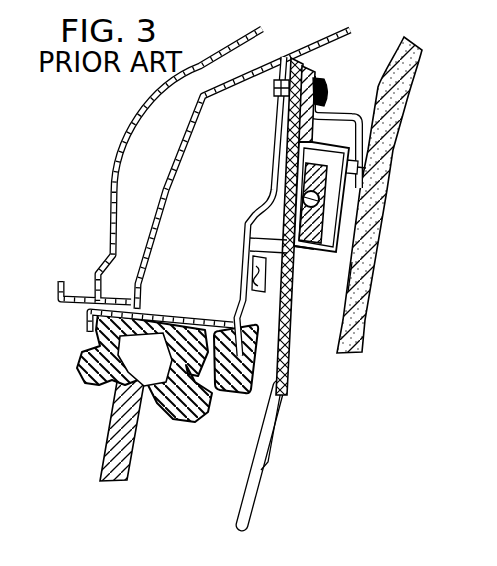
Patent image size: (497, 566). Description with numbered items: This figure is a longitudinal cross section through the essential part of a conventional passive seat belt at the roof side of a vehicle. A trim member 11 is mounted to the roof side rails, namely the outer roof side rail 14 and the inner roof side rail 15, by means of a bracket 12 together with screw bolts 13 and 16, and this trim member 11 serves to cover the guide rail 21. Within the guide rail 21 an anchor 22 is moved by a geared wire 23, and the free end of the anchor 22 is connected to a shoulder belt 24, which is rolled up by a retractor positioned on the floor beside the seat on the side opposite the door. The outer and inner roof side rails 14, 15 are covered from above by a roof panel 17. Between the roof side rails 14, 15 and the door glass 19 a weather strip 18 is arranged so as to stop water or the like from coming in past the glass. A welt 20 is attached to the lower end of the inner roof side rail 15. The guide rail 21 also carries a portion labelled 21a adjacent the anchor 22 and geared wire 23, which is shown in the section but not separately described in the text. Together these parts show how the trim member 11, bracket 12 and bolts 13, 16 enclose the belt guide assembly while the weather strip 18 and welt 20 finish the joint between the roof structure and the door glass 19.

The trim member 11 is at (383, 143).
The bracket 12 is at (362, 111).
The screw bolt 13 is at (378, 177).
The outer roof side rail 14 is at (173, 160).
The inner roof side rail 15 is at (280, 157).
The screw bolt 16 is at (326, 85).
The roof panel 17 is at (144, 107).
The weather strip 18 is at (86, 380).
The door glass 19 is at (131, 453).
The welt 20 is at (226, 393).
The guide rail 21 is at (334, 197).
The housing flange 21a is at (303, 253).
The anchor 22 is at (352, 278).
The geared wire 23 is at (312, 238).
The shoulder belt 24 is at (242, 513).